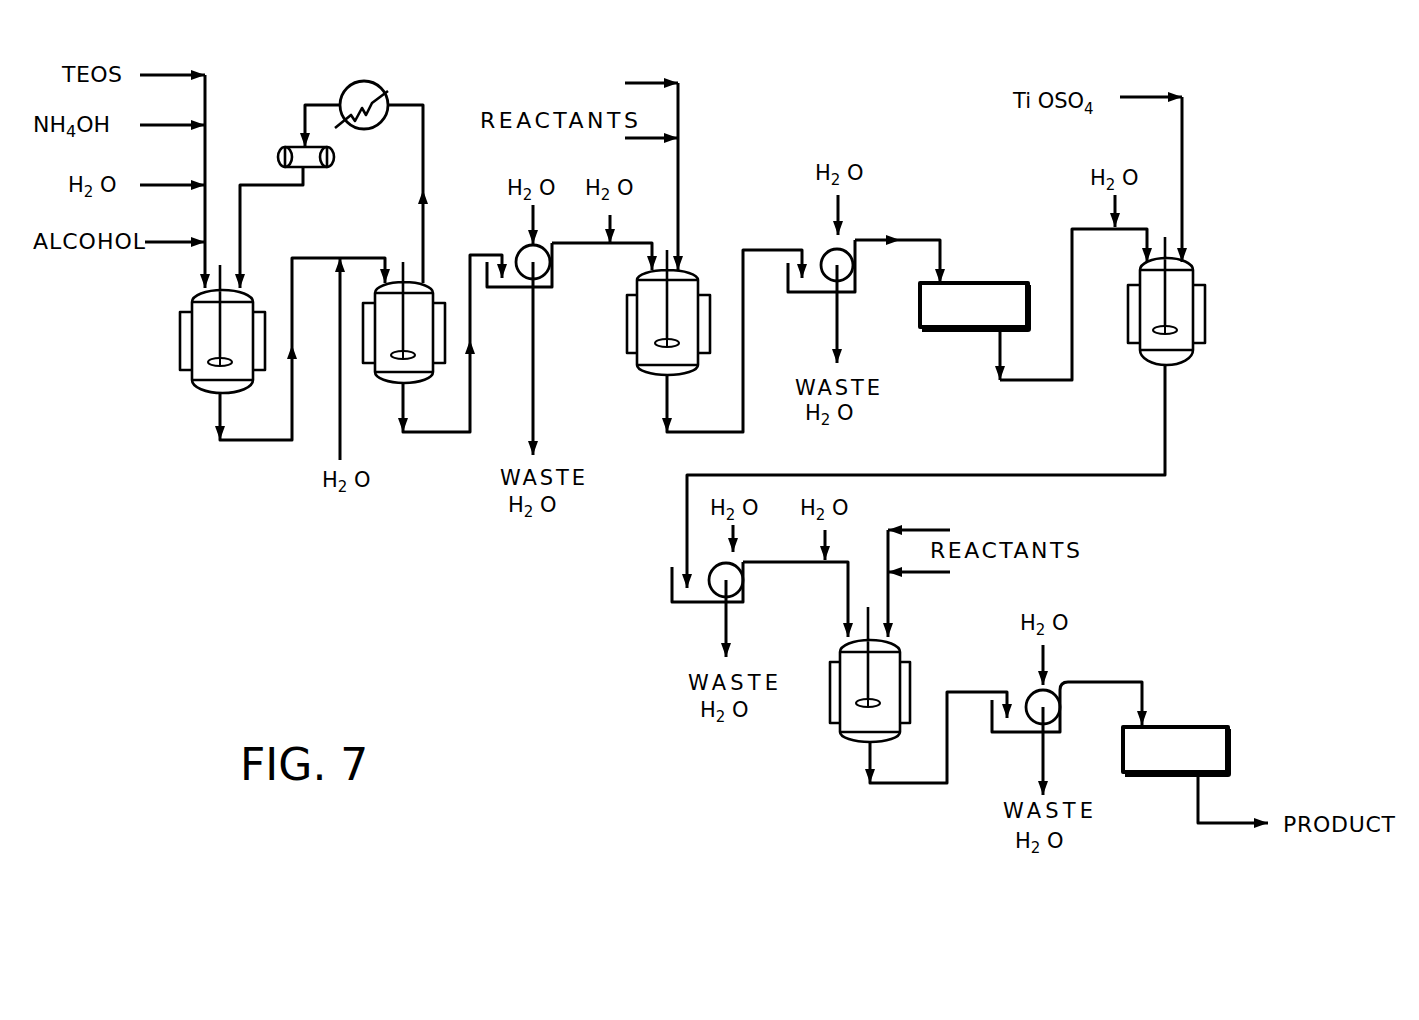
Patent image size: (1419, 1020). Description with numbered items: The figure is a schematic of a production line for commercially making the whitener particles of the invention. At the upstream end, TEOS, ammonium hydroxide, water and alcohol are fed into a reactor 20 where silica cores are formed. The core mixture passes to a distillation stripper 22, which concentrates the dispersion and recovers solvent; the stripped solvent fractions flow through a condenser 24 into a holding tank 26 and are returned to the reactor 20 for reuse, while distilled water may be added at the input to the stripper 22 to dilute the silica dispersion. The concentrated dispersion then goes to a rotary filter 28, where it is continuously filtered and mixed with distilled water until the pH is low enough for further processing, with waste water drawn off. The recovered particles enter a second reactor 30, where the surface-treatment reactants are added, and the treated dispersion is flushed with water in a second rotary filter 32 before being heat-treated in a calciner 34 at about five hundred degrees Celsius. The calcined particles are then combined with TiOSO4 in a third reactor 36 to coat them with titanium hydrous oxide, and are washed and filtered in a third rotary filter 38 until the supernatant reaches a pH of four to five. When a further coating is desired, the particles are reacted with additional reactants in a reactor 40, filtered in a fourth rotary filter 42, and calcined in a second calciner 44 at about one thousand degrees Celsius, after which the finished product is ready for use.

The reactor 20 is at (180, 332).
The distillation stripper 22 is at (428, 283).
The condenser 24 is at (358, 82).
The holding tank 26 is at (329, 167).
The rotary filter 28 is at (553, 280).
The second reactor 30 is at (640, 366).
The second rotary filter 32 is at (853, 292).
The calciner 34 is at (985, 283).
The third reactor 36 is at (1205, 298).
The third rotary filter 38 is at (693, 602).
The reactor for further coating 40 is at (910, 660).
The fourth rotary filter 42 is at (1008, 732).
The second calciner 44 is at (1183, 727).